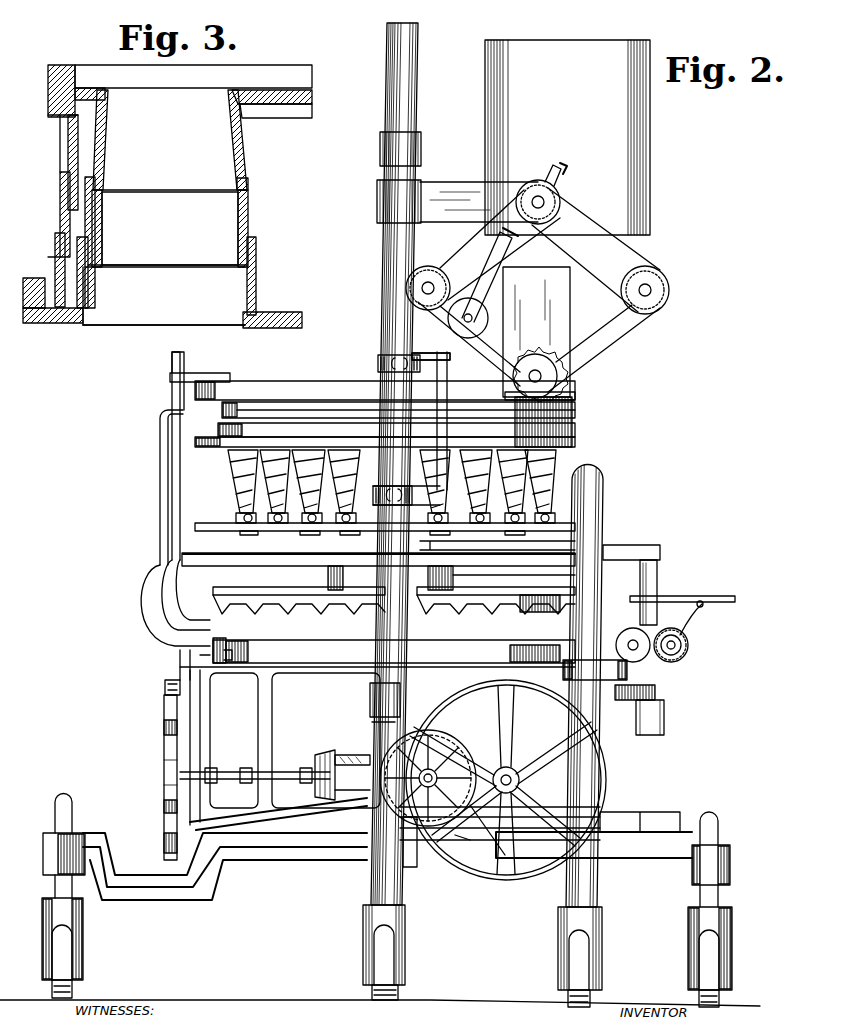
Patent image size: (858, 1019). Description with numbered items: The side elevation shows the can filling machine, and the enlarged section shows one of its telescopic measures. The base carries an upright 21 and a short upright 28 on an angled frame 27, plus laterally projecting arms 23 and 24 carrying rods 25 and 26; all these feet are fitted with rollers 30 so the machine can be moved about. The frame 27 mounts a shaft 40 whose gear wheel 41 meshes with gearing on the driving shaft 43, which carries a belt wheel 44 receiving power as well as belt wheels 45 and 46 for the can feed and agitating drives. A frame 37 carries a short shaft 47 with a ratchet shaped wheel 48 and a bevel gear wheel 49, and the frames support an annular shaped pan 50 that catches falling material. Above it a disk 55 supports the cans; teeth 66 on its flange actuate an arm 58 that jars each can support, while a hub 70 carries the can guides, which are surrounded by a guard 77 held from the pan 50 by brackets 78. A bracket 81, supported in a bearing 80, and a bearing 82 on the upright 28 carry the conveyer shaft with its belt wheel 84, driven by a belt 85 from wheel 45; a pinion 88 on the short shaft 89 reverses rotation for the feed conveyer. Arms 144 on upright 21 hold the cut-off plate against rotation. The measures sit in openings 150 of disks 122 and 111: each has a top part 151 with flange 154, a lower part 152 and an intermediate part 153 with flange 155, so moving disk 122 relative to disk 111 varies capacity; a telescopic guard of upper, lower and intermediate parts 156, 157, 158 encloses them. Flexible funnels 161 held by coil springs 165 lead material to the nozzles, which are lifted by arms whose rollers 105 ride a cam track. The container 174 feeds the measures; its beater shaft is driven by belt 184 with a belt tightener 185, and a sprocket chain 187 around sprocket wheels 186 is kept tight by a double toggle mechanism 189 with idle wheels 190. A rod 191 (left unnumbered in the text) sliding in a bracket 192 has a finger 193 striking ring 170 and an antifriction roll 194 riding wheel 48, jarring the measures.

In FIG. 3, the disk 122 is at (308, 92).
In FIG. 3, the top part 151 is at (240, 138).
In FIG. 3, the flange 155 is at (246, 178).
In FIG. 3, the flange 154 is at (250, 196).
In FIG. 3, the intermediate part 153 is at (248, 218).
In FIG. 3, the lower part 152 is at (256, 272).
In FIG. 3, the disk 111 is at (283, 316).
In FIG. 3, the openings 150 is at (242, 328).
In FIG. 2, the upper part 156 is at (252, 407).
In FIG. 3, the upper part 156 is at (69, 150).
In FIG. 2, the intermediate part 158 is at (297, 428).
In FIG. 3, the intermediate part 158 is at (62, 214).
In FIG. 2, the lower part 157 is at (230, 430).
In FIG. 3, the lower part 157 is at (57, 260).
In FIG. 2, the upright 21 is at (391, 243).
In FIG. 2, the container 174 is at (567, 137).
In FIG. 2, the belt tightener 185 is at (560, 196).
In FIG. 2, the idle wheels 190 is at (679, 293).
In FIG. 2, the double toggle mechanism 189 is at (550, 250).
In FIG. 2, the sprocket wheels 186 is at (538, 354).
In FIG. 2, the sprocket chain 187 is at (600, 346).
In FIG. 2, the arms 144 is at (428, 354).
In FIG. 2, the ring 170 is at (470, 396).
In FIG. 2, the belt 184 is at (575, 415).
In FIG. 2, the coil spring 165 is at (520, 470).
In FIG. 2, the short upright 28 is at (594, 524).
In FIG. 2, the finger 193 is at (213, 378).
In FIG. 2, the funnel 161 is at (262, 464).
In FIG. 2, the roller 105 is at (246, 512).
In FIG. 2, the bracket 192 is at (163, 472).
In FIG. 2, the inner pipe 191 is at (177, 543).
In FIG. 2, the guard 77 is at (262, 560).
In FIG. 2, the hub 70 is at (378, 572).
In FIG. 2, the brackets 78 is at (143, 614).
In FIG. 2, the teeth 66 is at (299, 613).
In FIG. 2, the disk 55 is at (492, 603).
In FIG. 2, the annular shaped pan 50 is at (377, 652).
In FIG. 2, the antifriction roll 194 is at (166, 689).
In FIG. 2, the frame 37 is at (267, 711).
In FIG. 2, the ratchet shaped wheel 48 is at (166, 732).
In FIG. 2, the short shaft 47 is at (228, 772).
In FIG. 2, the bevel gear wheel 49 is at (316, 766).
In FIG. 2, the frame 27 is at (386, 729).
In FIG. 2, the arm 58 is at (352, 772).
In FIG. 2, the shaft 40 is at (428, 778).
In FIG. 2, the driving shaft 43 is at (508, 784).
In FIG. 2, the belt wheel 45 is at (492, 802).
In FIG. 2, the belt wheel 46 is at (469, 849).
In FIG. 2, the belt wheel 44 is at (525, 870).
In FIG. 2, the gear wheel 41 is at (420, 858).
In FIG. 2, the laterally projecting arm 23 is at (345, 855).
In FIG. 2, the laterally projecting arm 24 is at (655, 855).
In FIG. 2, the rod 25 is at (58, 812).
In FIG. 2, the rod 26 is at (718, 830).
In FIG. 2, the roller 30 is at (74, 992).
In FIG. 2, the belt 85 is at (553, 690).
In FIG. 2, the bearing 82 is at (620, 632).
In FIG. 2, the belt wheel 84 is at (633, 630).
In FIG. 2, the pinion 88 is at (688, 645).
In FIG. 2, the short shaft 89 is at (690, 636).
In FIG. 2, the bracket 81 is at (650, 672).
In FIG. 2, the bearing 80 is at (664, 722).